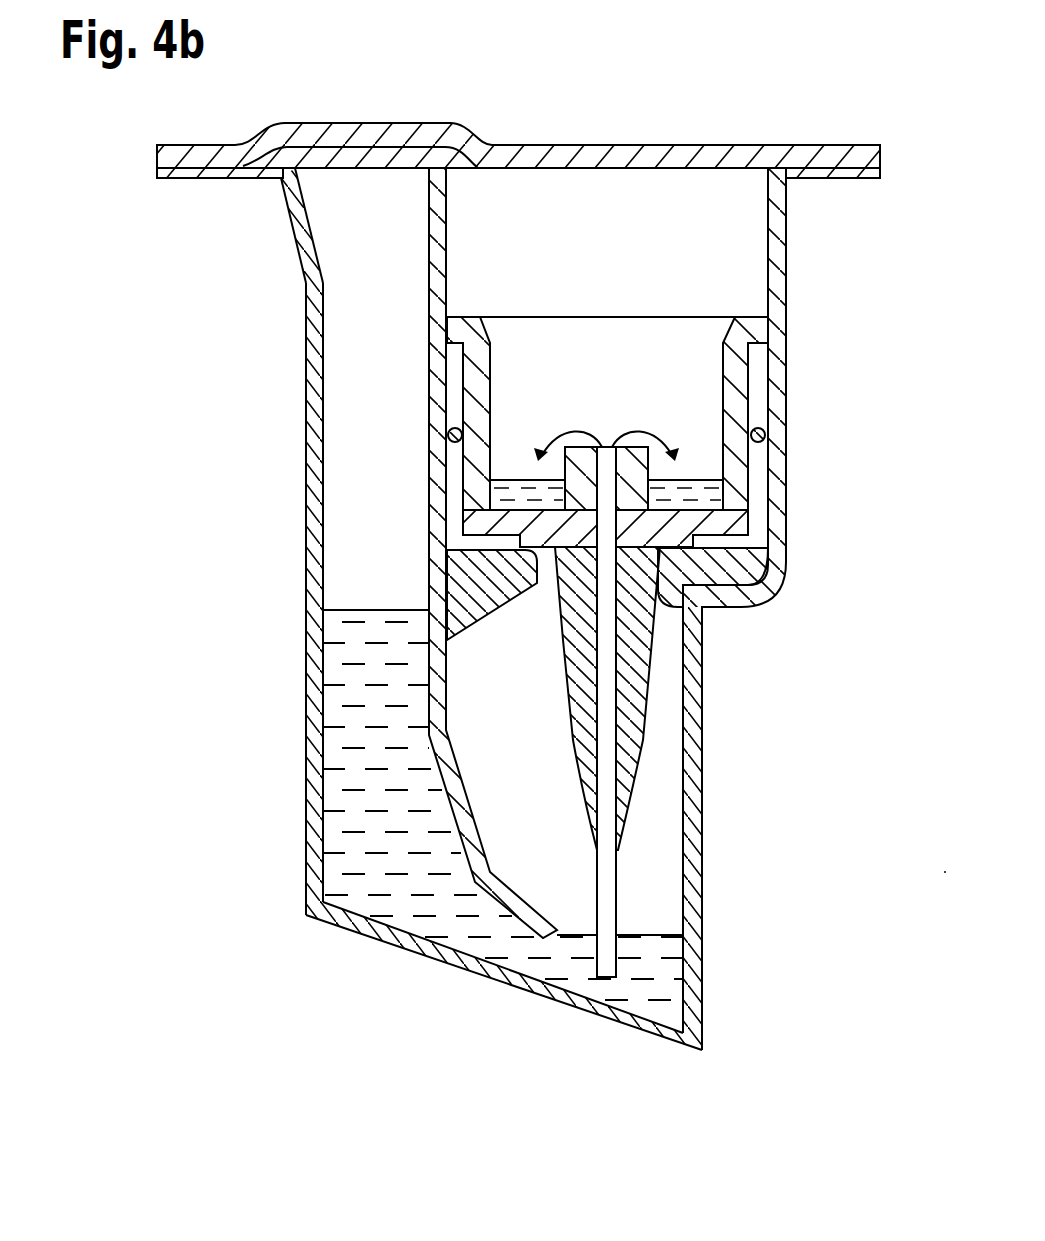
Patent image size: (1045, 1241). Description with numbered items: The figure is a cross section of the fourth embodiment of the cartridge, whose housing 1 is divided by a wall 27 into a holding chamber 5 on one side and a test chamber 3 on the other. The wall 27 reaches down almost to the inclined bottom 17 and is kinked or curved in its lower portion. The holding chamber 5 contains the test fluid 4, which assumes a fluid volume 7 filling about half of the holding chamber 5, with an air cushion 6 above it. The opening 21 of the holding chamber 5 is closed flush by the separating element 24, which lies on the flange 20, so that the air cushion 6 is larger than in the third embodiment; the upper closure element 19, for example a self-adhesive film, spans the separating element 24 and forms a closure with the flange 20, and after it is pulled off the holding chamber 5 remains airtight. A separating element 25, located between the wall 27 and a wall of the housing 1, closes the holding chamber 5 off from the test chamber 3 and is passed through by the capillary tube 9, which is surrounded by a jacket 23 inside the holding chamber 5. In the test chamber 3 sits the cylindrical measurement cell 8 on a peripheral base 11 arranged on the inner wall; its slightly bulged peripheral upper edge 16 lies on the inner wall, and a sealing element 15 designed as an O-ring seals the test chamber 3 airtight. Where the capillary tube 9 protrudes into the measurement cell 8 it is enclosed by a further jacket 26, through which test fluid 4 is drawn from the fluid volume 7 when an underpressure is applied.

The housing 1 is at (789, 543).
The test chamber 3 is at (778, 282).
The test fluid 4 is at (345, 678).
The holding chamber 5 is at (316, 386).
The air cushion 6 is at (345, 517).
The fluid volume 7 is at (372, 812).
The measurement cell 8 is at (740, 476).
The capillary tube 9 is at (607, 879).
The peripheral base 11 is at (455, 588).
The sealing element 15 is at (766, 437).
The peripheral upper edge 16 is at (745, 362).
The inclined bottom 17 is at (500, 968).
The upper closure element 19 is at (830, 150).
The flange 20 is at (172, 179).
The opening 21 is at (378, 187).
The jacket 23 is at (633, 720).
The separating element 24 is at (316, 160).
The separating element 25 is at (650, 912).
The further jacket 26 is at (582, 447).
The wall 27 is at (463, 838).